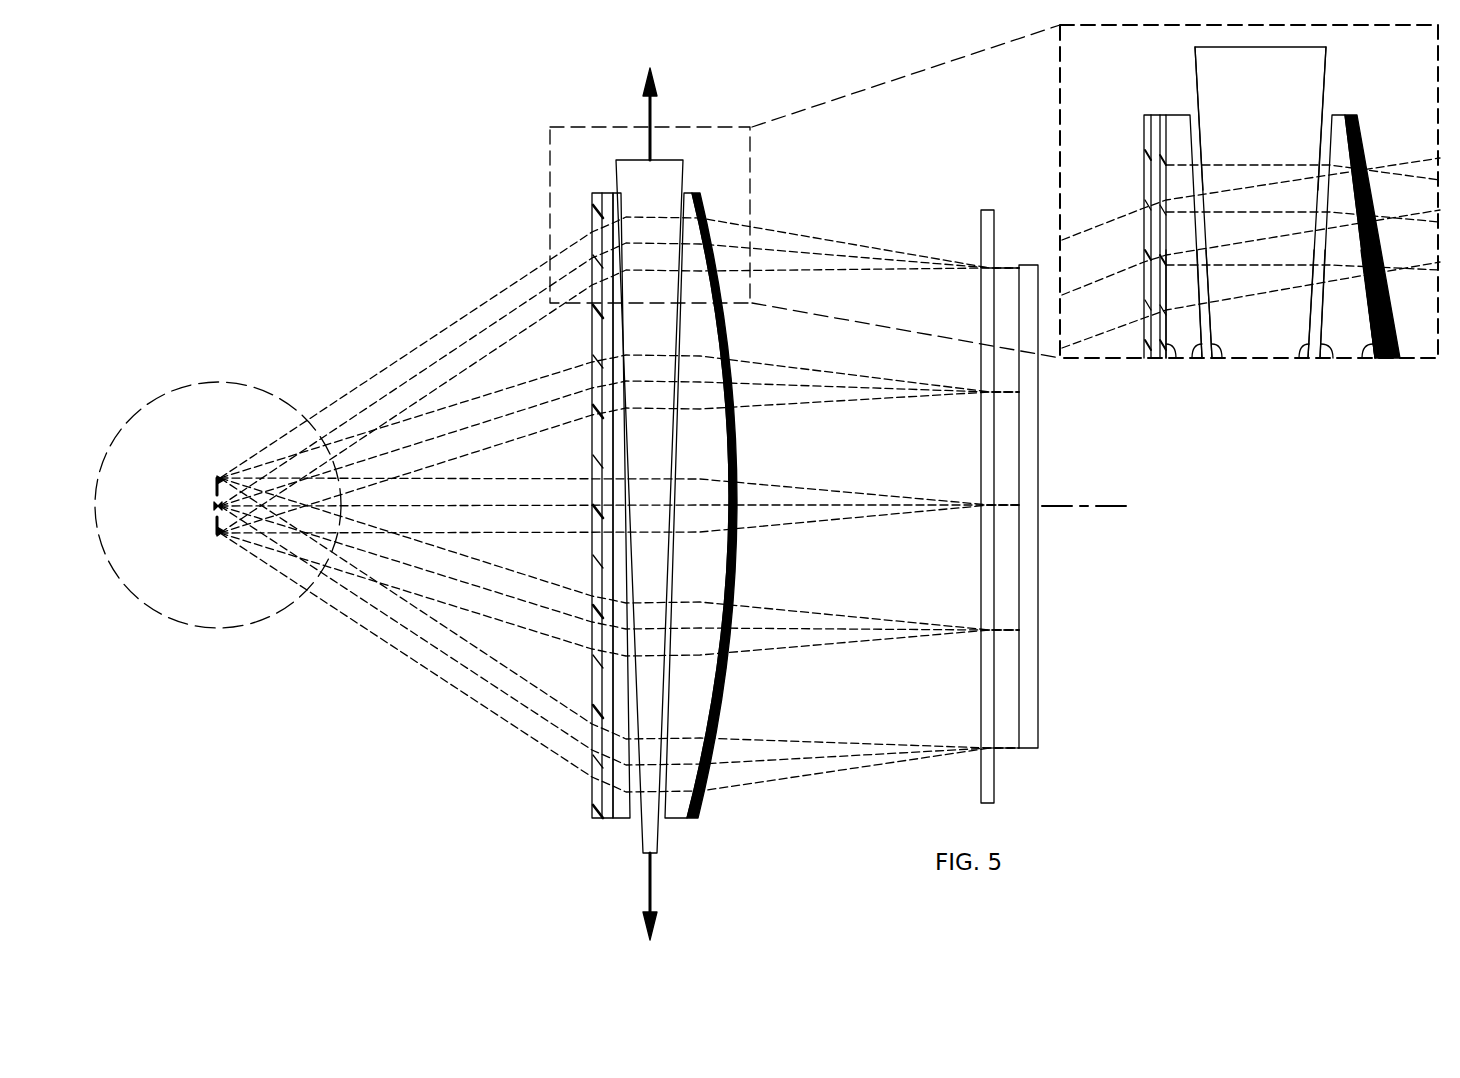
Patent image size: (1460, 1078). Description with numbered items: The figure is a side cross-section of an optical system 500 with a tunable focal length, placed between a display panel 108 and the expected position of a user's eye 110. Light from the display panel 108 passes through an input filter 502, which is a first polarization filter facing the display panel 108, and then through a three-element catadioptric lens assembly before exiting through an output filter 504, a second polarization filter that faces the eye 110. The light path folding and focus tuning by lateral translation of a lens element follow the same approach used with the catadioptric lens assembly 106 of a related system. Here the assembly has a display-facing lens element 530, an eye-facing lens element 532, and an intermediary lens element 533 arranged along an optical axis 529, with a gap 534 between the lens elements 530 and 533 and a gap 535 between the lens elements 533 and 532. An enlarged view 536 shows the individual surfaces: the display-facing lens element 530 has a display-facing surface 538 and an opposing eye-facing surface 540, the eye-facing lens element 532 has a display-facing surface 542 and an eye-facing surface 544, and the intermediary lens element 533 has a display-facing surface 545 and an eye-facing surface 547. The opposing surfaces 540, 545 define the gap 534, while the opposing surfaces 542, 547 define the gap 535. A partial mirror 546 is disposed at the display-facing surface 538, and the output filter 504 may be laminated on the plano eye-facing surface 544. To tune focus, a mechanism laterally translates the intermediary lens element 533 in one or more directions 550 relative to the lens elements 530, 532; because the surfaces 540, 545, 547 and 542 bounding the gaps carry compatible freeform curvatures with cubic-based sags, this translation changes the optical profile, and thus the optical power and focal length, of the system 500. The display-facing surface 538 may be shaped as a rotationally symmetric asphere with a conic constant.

The optical system 500 is at (322, 118).
The user's eye 110 is at (218, 381).
The directions 550 is at (647, 106).
The output filter 504 is at (591, 800).
The eye-facing lens element 532 is at (622, 814).
The intermediary lens element 533 is at (672, 165).
The display-facing lens element 530 is at (681, 814).
The partial mirror 546 is at (738, 555).
The catadioptric lens assembly 106 is at (763, 451).
The input filter 502 is at (976, 228).
The display panel 108 is at (1040, 465).
The optical axis 529 is at (1117, 509).
The enlarged view 536 is at (1055, 110).
The gap 535 is at (1190, 102).
The gap 534 is at (1333, 105).
The eye-facing surface 544 is at (1168, 363).
The display-facing surface 542 is at (1195, 363).
The eye-facing surface 547 is at (1224, 363).
The display-facing surface 545 is at (1303, 363).
The eye-facing surface 540 is at (1335, 363).
The display-facing surface 538 is at (1365, 363).